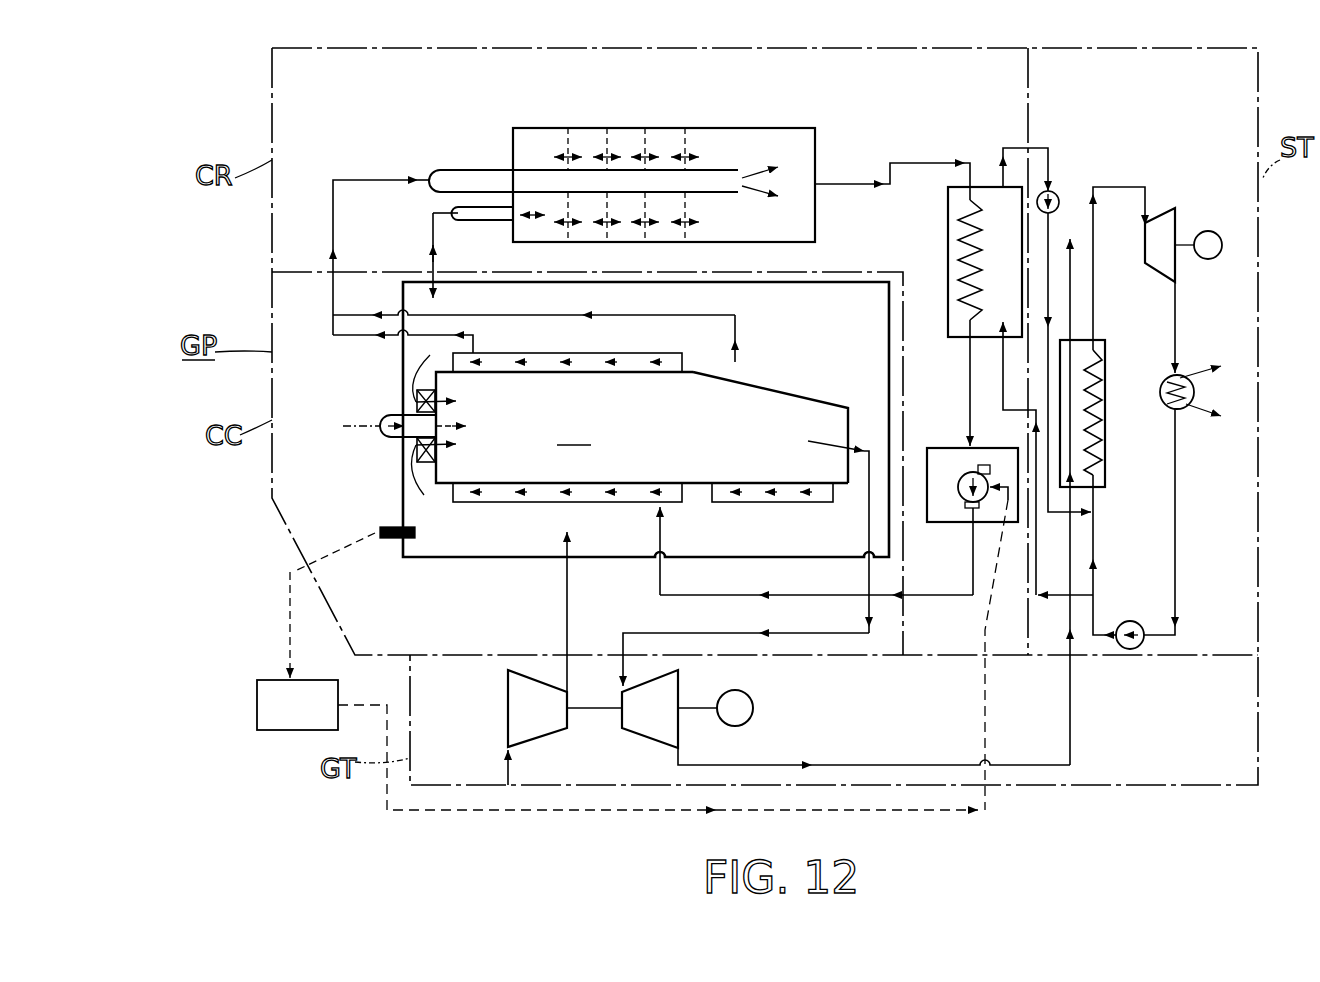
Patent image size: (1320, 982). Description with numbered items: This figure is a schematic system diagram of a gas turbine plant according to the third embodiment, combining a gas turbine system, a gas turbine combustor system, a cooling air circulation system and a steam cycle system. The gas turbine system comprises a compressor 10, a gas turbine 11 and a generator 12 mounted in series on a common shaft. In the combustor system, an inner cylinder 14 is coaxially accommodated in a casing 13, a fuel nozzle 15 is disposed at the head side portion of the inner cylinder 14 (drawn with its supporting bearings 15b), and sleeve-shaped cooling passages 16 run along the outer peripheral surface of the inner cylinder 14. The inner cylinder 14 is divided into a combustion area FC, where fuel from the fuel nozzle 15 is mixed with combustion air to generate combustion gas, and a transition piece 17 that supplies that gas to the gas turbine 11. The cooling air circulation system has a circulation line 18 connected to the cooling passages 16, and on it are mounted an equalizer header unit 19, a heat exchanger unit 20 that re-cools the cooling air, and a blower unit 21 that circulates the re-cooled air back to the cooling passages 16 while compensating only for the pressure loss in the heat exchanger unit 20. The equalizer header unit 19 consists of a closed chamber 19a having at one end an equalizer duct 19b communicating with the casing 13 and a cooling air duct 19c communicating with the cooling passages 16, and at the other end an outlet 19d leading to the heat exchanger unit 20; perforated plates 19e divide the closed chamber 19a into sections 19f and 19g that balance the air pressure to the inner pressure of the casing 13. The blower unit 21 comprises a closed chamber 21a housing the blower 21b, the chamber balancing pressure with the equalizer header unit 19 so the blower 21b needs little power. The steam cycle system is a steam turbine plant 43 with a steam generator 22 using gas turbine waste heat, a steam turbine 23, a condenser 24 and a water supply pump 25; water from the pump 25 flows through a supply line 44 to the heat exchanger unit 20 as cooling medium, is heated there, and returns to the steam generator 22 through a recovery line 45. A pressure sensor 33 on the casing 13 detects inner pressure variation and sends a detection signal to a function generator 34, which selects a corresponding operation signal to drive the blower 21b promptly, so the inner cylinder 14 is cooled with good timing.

The compressor 10 is at (508, 707).
The gas turbine 11 is at (645, 735).
The generator 12 is at (755, 697).
The casing 13 is at (470, 558).
The inner cylinder 14 is at (437, 502).
The fuel nozzle 15 is at (387, 437).
The bearings 15b is at (416, 400).
The cooling passages 16 is at (545, 332).
The transition piece 17 is at (790, 410).
The circulation line 18 is at (333, 197).
The equalizer header unit 19 is at (659, 178).
The closed chamber 19a is at (735, 128).
The equalizer duct 19b is at (483, 220).
The cooling air duct 19c is at (452, 170).
The outlet 19d is at (820, 184).
The perforated plates 19e is at (570, 138).
The sections 19f is at (532, 135).
The sections 19g is at (683, 125).
The heat exchanger unit 20 is at (948, 234).
The blower unit 21 is at (962, 586).
The closed chamber 21a is at (927, 505).
The blower 21b is at (970, 509).
The steam generator 22 is at (1105, 345).
The steam turbine 23 is at (1155, 212).
The condenser 24 is at (1186, 372).
The water supply pump 25 is at (1136, 650).
The pressure sensor 33 is at (378, 530).
The function generator 34 is at (257, 705).
The steam turbine plant 43 is at (1180, 520).
The supply line 44 is at (1053, 598).
The recovery line 45 is at (1055, 515).